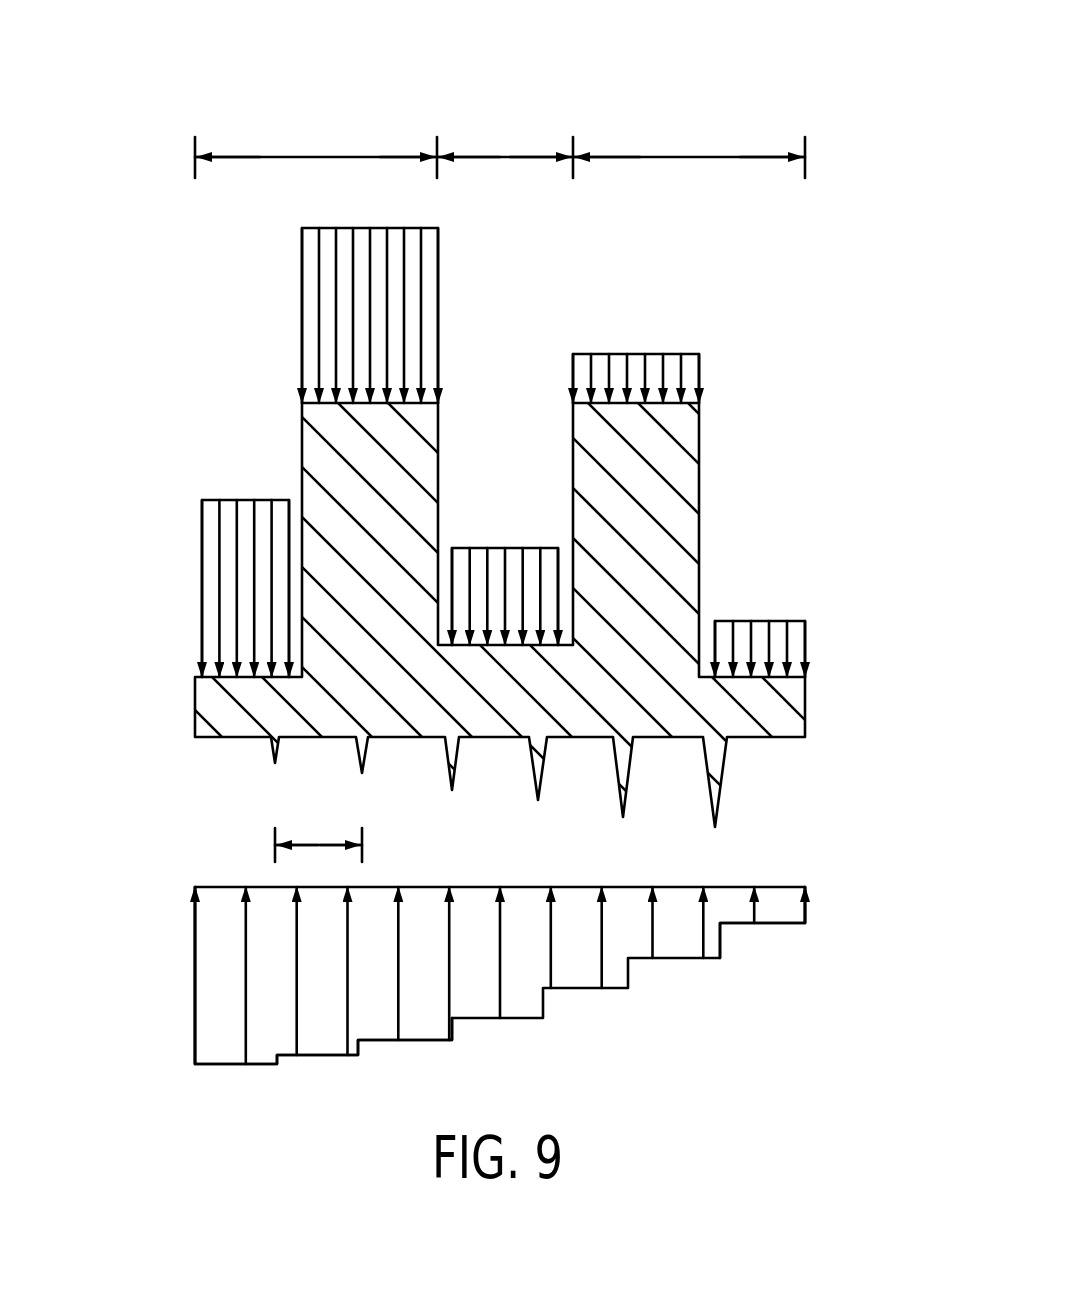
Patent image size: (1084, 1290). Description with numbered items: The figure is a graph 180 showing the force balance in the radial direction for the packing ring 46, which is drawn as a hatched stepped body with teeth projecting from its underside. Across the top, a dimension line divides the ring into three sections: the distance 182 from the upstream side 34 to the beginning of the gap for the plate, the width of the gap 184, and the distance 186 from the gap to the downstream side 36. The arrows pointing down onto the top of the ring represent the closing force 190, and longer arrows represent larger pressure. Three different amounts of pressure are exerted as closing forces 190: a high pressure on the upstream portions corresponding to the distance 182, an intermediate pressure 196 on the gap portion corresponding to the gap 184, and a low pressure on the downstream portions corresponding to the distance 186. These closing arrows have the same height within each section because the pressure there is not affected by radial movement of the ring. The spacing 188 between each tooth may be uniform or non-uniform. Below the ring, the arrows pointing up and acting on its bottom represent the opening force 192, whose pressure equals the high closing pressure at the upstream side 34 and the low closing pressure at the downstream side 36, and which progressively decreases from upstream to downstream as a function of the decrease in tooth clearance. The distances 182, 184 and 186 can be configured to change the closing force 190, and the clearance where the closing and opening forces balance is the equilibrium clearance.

The graph 180 is at (500, 89).
The upstream distance 182 is at (317, 155).
The gap width 184 is at (505, 155).
The downstream distance 186 is at (690, 155).
The tooth spacing 188 is at (318, 838).
The closing force 190 is at (470, 452).
The opening force 192 is at (505, 988).
The intermediate pressure 196 is at (472, 565).
The packing ring 46 is at (688, 488).
The upstream side 34 is at (166, 648).
The downstream side 36 is at (836, 647).